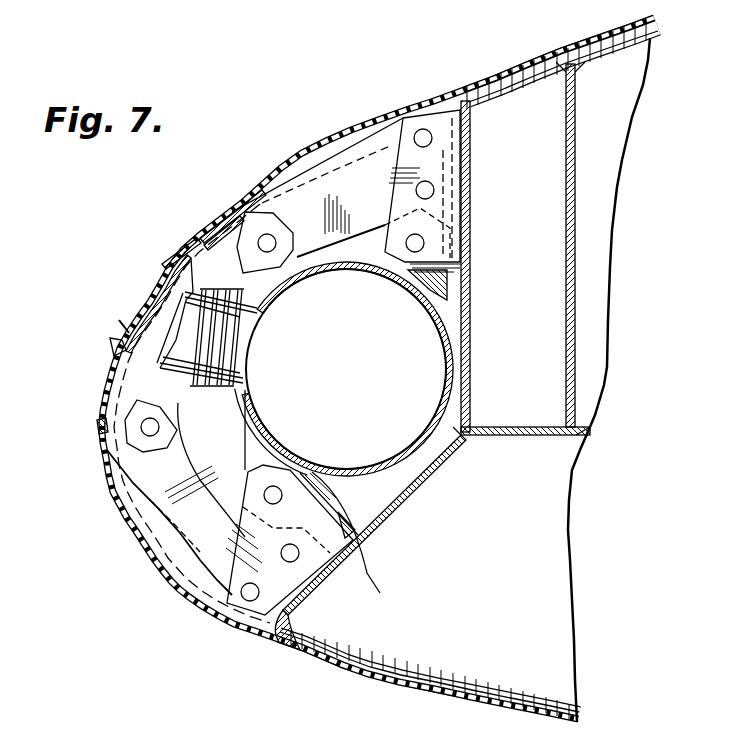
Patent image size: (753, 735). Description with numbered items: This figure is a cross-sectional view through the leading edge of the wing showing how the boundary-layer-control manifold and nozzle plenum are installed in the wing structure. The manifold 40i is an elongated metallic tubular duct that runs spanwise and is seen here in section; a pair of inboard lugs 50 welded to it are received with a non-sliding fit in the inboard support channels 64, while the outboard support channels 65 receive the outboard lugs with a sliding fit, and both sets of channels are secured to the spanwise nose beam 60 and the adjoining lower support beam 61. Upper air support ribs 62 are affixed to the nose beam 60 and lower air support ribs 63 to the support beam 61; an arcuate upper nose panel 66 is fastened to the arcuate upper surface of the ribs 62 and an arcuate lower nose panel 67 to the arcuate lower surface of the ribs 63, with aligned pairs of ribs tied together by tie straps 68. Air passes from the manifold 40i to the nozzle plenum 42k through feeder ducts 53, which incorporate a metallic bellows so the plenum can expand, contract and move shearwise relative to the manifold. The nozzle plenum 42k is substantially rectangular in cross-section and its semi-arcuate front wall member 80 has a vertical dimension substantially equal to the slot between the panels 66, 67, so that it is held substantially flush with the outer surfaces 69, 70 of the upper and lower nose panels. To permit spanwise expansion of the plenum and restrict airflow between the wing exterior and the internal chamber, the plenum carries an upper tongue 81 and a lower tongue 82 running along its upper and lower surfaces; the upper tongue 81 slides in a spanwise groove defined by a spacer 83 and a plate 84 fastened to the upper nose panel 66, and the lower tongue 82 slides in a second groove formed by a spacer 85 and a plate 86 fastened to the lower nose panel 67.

The manifold 40i is at (423, 440).
The nozzle plenum 42k is at (127, 327).
The inboard lugs 50 is at (437, 292).
The feeder ducts 53 is at (207, 387).
The nose beam 60 is at (530, 437).
The lower support beam 61 is at (387, 520).
The upper air support ribs 62 is at (380, 165).
The lower air support ribs 63 is at (197, 557).
The inboard support channels 64 is at (437, 120).
The outboard support channels 65 is at (262, 603).
The upper nose panel 66 is at (307, 162).
The lower nose panel 67 is at (123, 540).
The tie straps 68 is at (250, 212).
The outer surface of upper nose panel 69 is at (278, 173).
The outer surface of lower nose panel 70 is at (110, 508).
The front wall member 80 is at (157, 287).
The upper tongue 81 is at (173, 253).
The lower tongue 82 is at (123, 343).
The spanwise spacer 83 is at (232, 228).
The spanwise plate 84 is at (203, 242).
The spanwise spacer 85 is at (97, 427).
The spanwise plate 86 is at (110, 395).